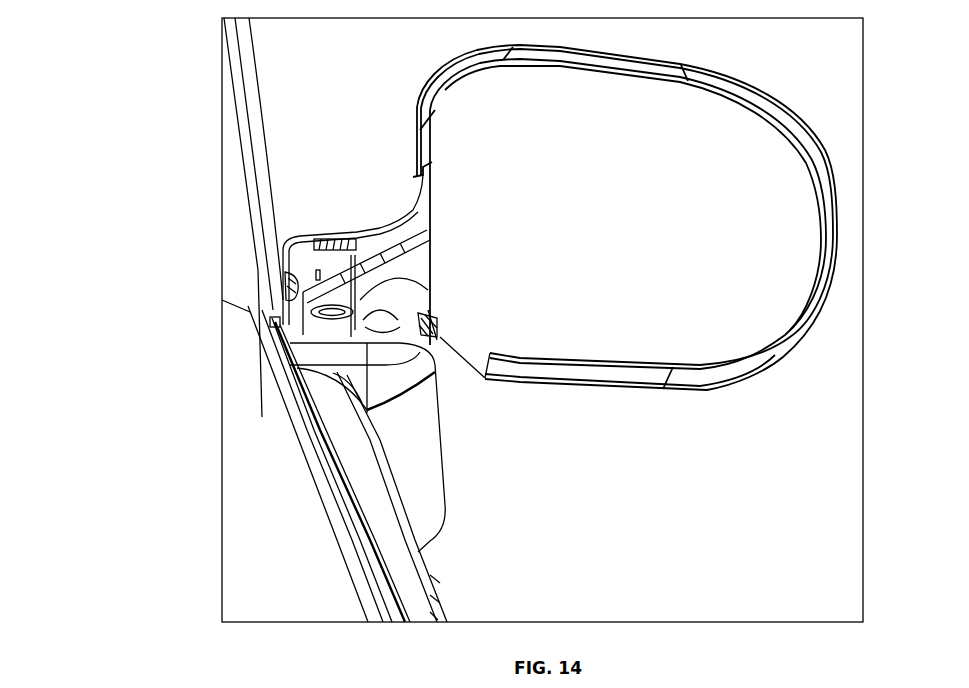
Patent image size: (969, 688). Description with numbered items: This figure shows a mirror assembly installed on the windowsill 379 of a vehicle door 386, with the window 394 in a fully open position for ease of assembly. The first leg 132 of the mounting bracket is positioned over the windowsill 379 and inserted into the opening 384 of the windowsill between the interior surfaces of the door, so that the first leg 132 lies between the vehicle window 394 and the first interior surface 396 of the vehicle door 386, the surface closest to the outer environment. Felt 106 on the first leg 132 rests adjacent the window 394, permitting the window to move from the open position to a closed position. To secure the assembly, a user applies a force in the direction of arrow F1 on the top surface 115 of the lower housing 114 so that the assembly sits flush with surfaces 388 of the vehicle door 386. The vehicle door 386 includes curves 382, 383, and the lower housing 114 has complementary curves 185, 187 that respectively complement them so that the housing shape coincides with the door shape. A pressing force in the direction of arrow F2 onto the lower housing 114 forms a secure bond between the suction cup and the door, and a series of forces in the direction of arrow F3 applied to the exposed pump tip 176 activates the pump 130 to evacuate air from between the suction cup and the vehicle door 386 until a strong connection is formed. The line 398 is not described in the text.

The felt 106 is at (299, 360).
The lower housing 114 is at (430, 502).
The top surface 115 is at (290, 302).
The pump 130 is at (445, 345).
The first leg 132 is at (255, 318).
The pump tip 176 is at (437, 319).
The complementary curve 185 is at (378, 413).
The complementary curve 187 is at (370, 409).
The windowsill 379 is at (302, 462).
The curve 382 is at (430, 612).
The curve 383 is at (430, 595).
The opening 384 is at (290, 408).
The vehicle door 386 is at (430, 575).
The surfaces 388 is at (430, 538).
The window 394 is at (353, 532).
The first interior surface 396 is at (407, 622).
The inner lip 398 is at (383, 623).
The arrow F1 is at (326, 330).
The arrow F2 is at (545, 421).
The arrow F3 is at (378, 306).